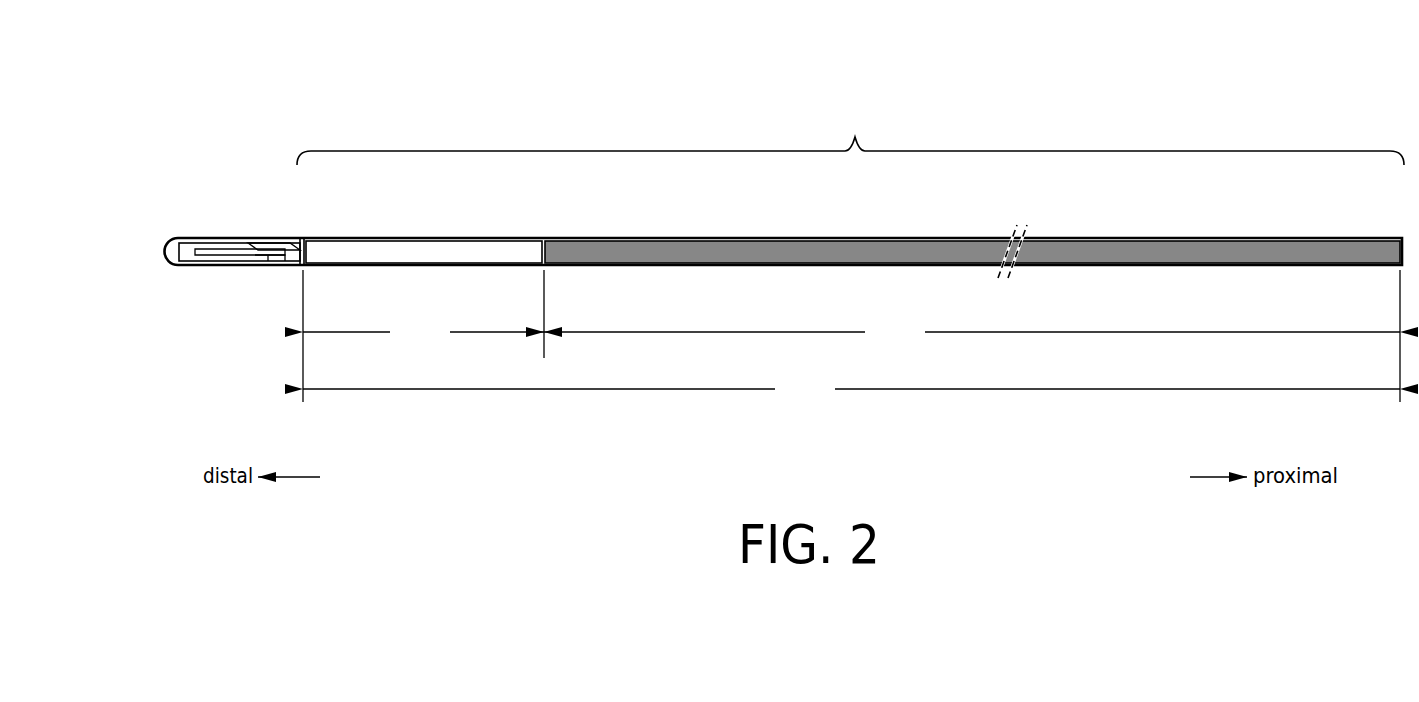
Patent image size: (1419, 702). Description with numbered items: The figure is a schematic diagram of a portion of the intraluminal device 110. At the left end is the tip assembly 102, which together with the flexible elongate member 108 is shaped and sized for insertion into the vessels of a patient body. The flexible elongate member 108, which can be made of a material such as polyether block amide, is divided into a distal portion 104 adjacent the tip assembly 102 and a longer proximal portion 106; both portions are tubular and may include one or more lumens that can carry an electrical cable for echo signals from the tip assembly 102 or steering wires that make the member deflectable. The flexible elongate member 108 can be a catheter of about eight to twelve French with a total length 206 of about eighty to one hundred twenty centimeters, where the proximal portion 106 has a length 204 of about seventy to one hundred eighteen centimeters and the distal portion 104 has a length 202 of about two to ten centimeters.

The tip assembly 102 is at (223, 238).
The distal portion 104 is at (429, 238).
The proximal portion 106 is at (733, 238).
The flexible elongate member 108 is at (850, 191).
The intraluminal device 110 is at (1230, 123).
The length 202 is at (423, 336).
The length 204 is at (972, 336).
The total length 206 is at (851, 390).